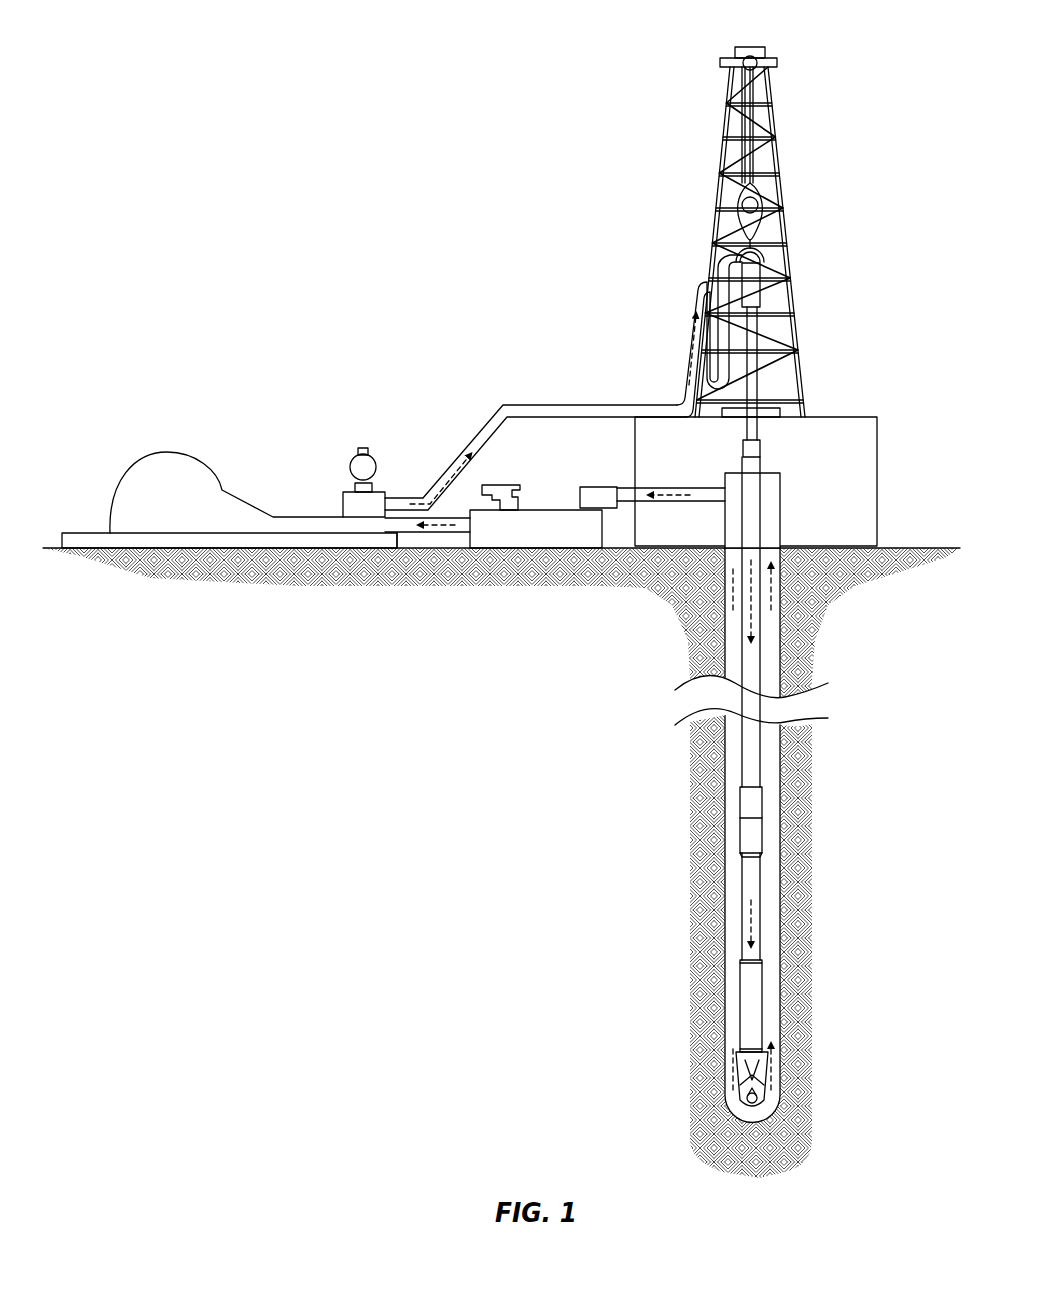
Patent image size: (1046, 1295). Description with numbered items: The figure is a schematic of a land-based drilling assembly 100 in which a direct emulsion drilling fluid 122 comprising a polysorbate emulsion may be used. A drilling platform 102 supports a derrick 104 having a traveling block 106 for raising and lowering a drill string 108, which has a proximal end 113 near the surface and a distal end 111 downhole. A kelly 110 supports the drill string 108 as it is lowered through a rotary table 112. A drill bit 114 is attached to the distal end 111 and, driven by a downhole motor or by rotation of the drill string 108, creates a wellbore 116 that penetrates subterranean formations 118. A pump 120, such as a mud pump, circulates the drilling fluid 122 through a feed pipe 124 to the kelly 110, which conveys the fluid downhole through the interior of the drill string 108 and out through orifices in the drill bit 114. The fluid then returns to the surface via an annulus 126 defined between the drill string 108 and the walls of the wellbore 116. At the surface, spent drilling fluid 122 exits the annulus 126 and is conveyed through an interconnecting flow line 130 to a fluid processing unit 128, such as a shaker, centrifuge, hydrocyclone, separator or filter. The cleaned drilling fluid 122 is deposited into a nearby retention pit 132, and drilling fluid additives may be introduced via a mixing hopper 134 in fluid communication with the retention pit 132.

The drilling assembly 100 is at (558, 72).
The drilling platform 102 is at (877, 447).
The derrick 104 is at (778, 155).
The traveling block 106 is at (763, 197).
The drill string 108 is at (757, 668).
The kelly 110 is at (757, 330).
The distal end 111 is at (747, 1015).
The rotary table 112 is at (777, 413).
The proximal end 113 is at (757, 487).
The drill bit 114 is at (773, 1097).
The wellbore 116 is at (782, 753).
The subterranean formations 118 is at (615, 781).
The pump 120 is at (182, 514).
The drilling fluid 122 is at (410, 500).
The feed pipe 124 is at (520, 405).
The annulus 126 is at (773, 940).
The fluid processing unit 128 is at (597, 487).
The flow line 130 is at (657, 501).
The retention pit 132 is at (558, 538).
The mixing hopper 134 is at (503, 490).